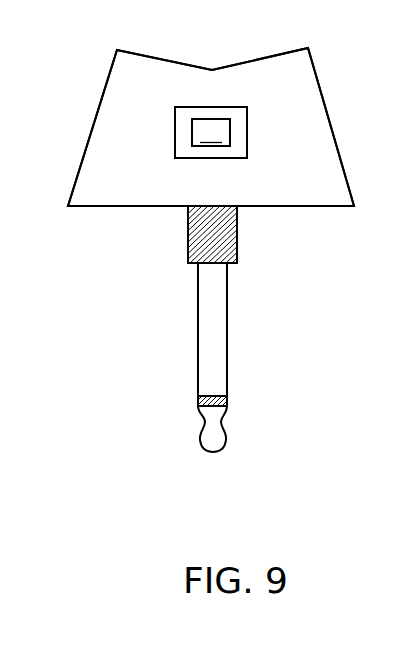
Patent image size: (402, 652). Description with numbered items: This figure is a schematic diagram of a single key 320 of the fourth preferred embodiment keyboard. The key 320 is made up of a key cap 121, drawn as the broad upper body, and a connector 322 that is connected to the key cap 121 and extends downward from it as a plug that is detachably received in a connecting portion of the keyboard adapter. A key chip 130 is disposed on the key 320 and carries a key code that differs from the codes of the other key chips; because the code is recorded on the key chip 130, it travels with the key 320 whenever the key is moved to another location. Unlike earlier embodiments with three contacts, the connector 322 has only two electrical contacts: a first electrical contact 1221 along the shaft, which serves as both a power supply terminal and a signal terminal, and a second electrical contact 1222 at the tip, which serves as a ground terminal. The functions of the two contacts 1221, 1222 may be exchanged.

The key 320 is at (80, 36).
The key cap 121 is at (322, 137).
The key chip 130 is at (248, 120).
The connector 322 is at (300, 292).
The first electrical contact 1221 is at (213, 299).
The second electrical contact 1222 is at (213, 431).